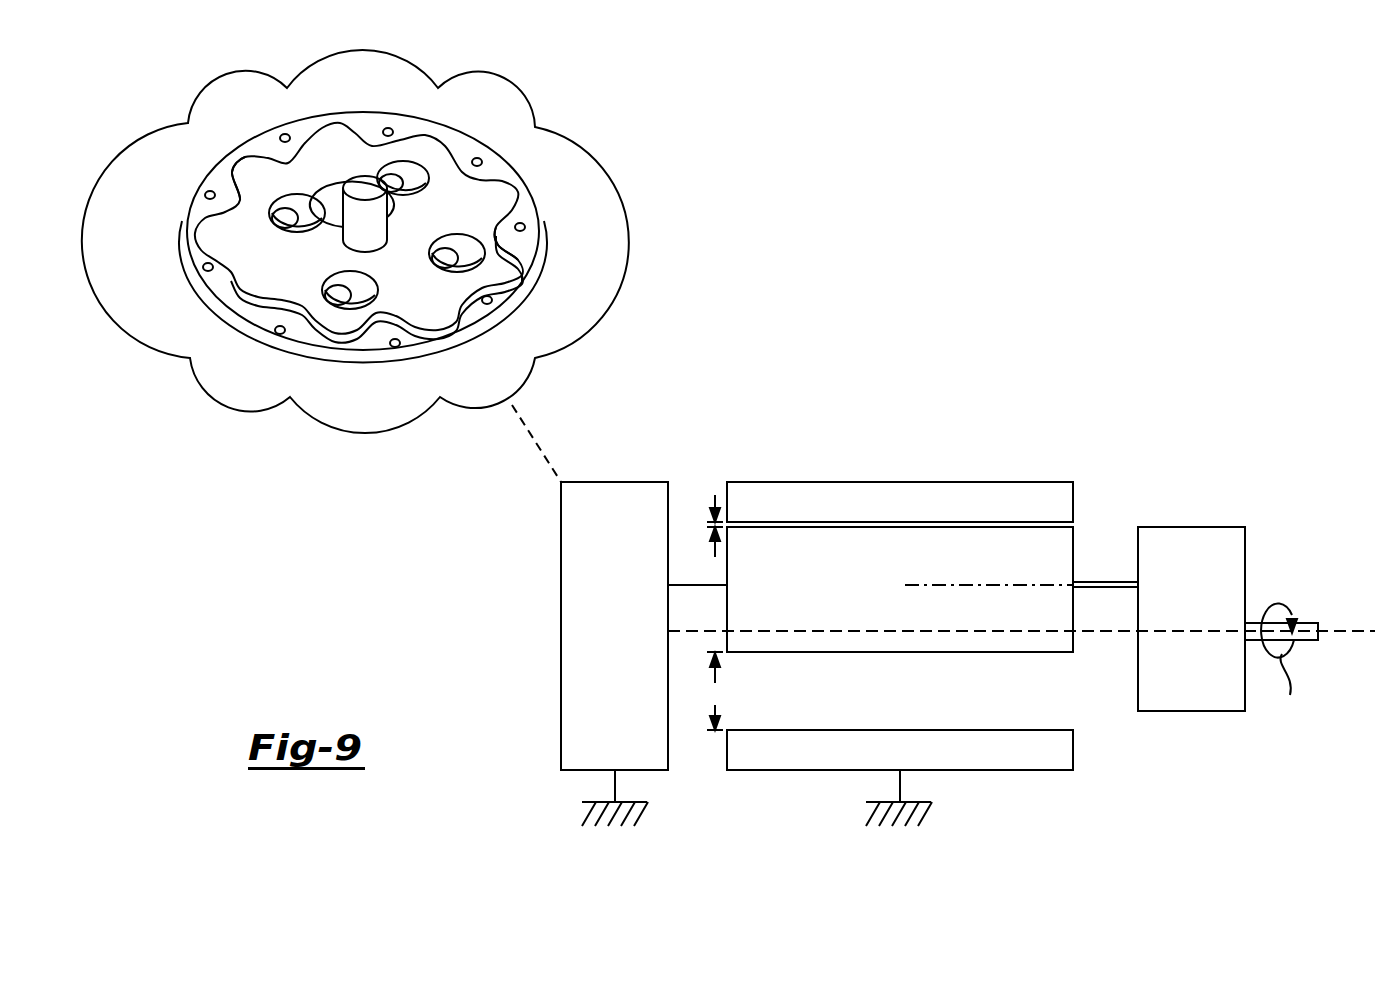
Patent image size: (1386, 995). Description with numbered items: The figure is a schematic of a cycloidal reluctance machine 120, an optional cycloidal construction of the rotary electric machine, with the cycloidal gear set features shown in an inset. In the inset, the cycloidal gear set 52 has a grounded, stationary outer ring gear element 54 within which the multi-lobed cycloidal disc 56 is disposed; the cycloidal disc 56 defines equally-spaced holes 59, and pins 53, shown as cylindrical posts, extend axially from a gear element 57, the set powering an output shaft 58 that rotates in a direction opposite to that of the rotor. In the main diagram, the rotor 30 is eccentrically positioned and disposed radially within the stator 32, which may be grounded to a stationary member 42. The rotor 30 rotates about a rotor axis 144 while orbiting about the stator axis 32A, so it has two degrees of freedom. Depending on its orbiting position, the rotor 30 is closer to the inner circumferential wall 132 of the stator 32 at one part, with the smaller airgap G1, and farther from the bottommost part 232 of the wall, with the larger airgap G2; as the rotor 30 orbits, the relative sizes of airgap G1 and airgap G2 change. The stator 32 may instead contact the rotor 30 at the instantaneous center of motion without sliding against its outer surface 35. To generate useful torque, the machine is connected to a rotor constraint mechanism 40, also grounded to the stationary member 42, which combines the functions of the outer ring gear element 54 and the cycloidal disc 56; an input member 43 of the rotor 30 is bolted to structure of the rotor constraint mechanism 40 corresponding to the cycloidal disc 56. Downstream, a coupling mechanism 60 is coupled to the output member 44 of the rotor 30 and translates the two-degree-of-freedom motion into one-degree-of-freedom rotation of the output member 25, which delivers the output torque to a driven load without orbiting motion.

The cycloidal gear set 52 is at (602, 125).
The outer ring gear element 54 is at (272, 142).
The pins 53 is at (315, 290).
The cycloidal disc 56 is at (246, 265).
The gear element 57 is at (515, 262).
The holes 59 is at (392, 305).
The output shaft 58 is at (366, 186).
The cycloidal reluctance machine 120 is at (1063, 357).
The rotor constraint mechanism 40 is at (561, 572).
The stationary member 42 is at (578, 818).
The input member 43 is at (697, 585).
The stator axis 32A is at (1102, 633).
The rotor 30 is at (810, 597).
The outer surface 35 is at (968, 653).
The rotor axis 144 is at (958, 583).
The stator 32 is at (944, 613).
The inner circumferential wall 132 is at (1052, 527).
The bottommost part 232 is at (1048, 730).
The airgap G1 is at (712, 495).
The airgap G2 is at (713, 691).
The output member 44 is at (1103, 580).
The coupling mechanism 60 is at (1209, 527).
The output member 25 is at (1306, 617).